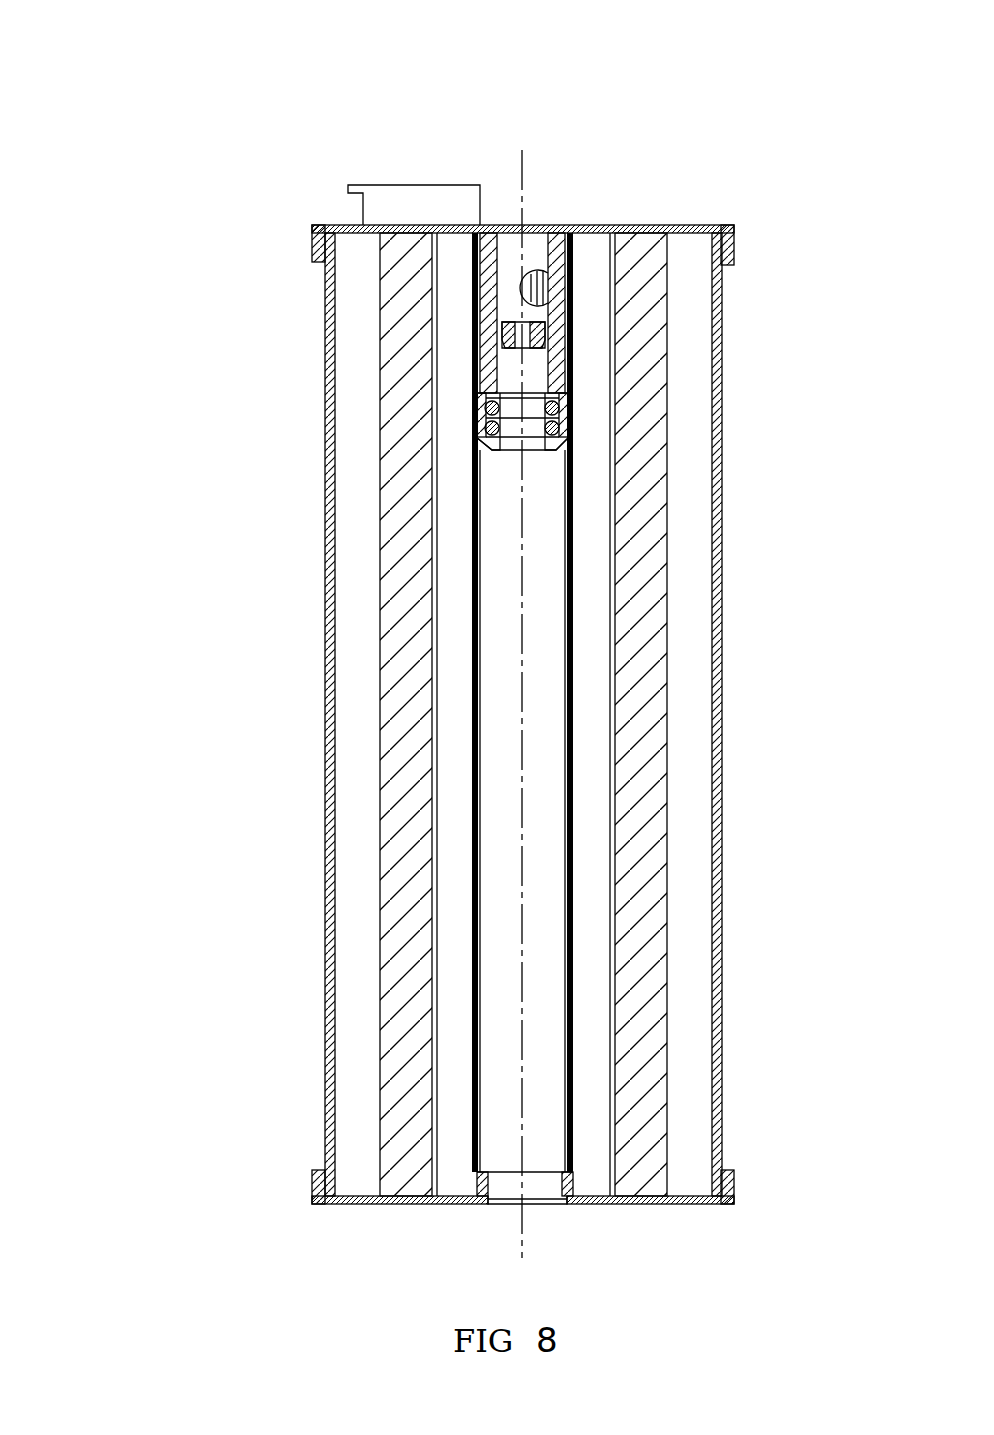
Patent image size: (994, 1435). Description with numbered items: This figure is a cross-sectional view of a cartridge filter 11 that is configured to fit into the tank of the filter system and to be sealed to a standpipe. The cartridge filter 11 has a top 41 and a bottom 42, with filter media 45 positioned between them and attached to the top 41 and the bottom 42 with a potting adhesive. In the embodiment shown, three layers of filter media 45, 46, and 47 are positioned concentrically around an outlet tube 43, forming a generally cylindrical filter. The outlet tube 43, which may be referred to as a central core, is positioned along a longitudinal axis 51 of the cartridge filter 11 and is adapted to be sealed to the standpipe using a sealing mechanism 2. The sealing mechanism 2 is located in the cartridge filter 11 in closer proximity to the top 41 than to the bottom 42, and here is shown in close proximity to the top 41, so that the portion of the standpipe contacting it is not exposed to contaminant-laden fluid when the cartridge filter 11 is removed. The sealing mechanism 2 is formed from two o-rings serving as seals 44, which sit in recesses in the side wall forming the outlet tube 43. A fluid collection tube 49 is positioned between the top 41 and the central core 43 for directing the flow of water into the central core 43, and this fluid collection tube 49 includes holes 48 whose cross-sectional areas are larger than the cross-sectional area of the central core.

The cartridge filter 11 is at (190, 718).
The top 41 is at (487, 621).
The bottom 42 is at (569, 1249).
The outlet tube 43 is at (677, 811).
The seals 44 is at (522, 428).
The filter media 45 is at (593, 694).
The filter media 46 is at (627, 714).
The filter media 47 is at (655, 714).
The holes 48 is at (583, 171).
The fluid collection tube 49 is at (512, 272).
The longitudinal axis 51 is at (517, 1218).
The sealing mechanism 2 is at (598, 422).